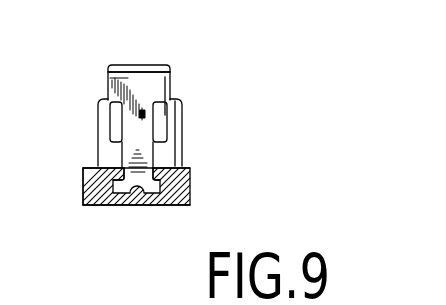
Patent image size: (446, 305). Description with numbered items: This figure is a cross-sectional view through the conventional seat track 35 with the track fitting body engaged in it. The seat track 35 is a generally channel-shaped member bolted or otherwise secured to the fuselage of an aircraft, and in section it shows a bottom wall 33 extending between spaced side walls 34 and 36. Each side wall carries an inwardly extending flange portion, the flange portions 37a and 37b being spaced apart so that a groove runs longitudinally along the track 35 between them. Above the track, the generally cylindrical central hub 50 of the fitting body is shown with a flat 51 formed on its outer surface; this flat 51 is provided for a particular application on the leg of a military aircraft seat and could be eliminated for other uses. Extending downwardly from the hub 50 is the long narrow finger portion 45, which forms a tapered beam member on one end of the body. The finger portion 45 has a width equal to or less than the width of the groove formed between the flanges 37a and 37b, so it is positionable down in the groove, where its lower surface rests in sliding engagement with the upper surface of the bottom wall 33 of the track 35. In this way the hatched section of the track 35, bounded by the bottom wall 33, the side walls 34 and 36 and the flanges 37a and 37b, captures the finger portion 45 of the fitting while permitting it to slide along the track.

The bottom wall 33 is at (145, 207).
The side wall 34 is at (192, 193).
The seat track 35 is at (82, 197).
The side wall 36 is at (84, 188).
The flange portion 37a is at (190, 170).
The flange portion 37b is at (113, 175).
The finger portion 45 is at (128, 167).
The central hub 50 is at (137, 67).
The flat 51 is at (110, 82).